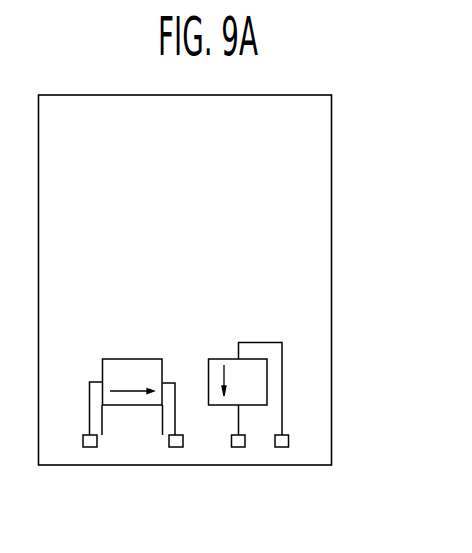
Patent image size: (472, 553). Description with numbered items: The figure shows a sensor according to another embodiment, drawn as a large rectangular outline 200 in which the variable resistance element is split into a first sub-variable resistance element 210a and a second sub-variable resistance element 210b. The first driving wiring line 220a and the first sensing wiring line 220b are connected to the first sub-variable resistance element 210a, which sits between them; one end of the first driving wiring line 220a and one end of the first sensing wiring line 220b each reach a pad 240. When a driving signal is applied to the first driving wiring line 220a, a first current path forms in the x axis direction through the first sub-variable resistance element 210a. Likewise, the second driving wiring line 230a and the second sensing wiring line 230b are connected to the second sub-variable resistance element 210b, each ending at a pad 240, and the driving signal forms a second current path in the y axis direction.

The display panel 200 is at (332, 301).
The first sub-variable resistance element 210a is at (126, 359).
The second sub-variable resistance element 210b is at (223, 359).
The first driving wiring line 220a is at (101, 382).
The first sensing wiring line 220b is at (168, 383).
The second driving wiring line 230a is at (277, 342).
The second sensing wiring line 230b is at (238, 423).
The pad 240 is at (92, 447).